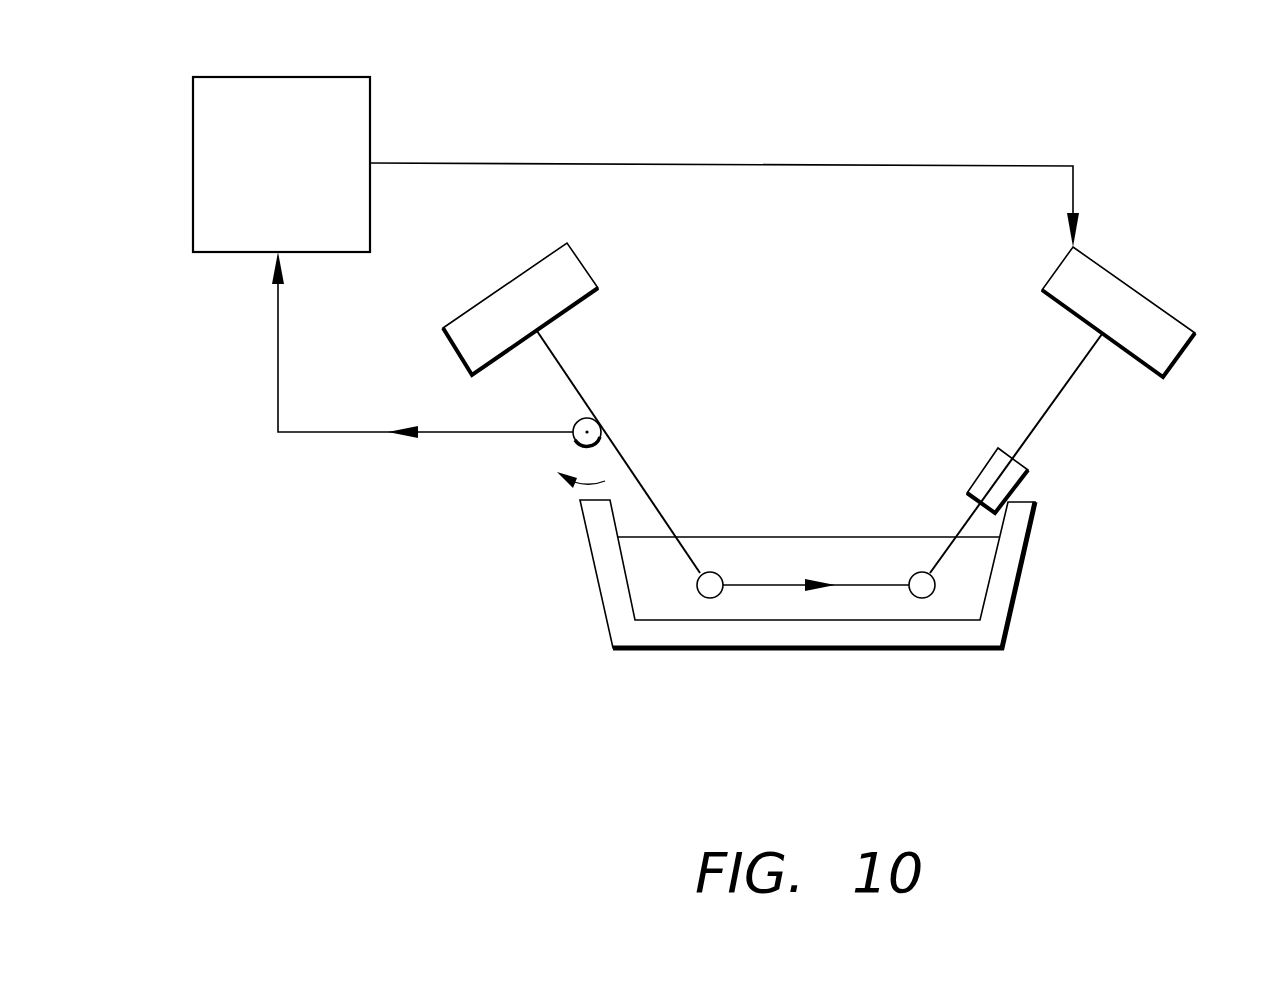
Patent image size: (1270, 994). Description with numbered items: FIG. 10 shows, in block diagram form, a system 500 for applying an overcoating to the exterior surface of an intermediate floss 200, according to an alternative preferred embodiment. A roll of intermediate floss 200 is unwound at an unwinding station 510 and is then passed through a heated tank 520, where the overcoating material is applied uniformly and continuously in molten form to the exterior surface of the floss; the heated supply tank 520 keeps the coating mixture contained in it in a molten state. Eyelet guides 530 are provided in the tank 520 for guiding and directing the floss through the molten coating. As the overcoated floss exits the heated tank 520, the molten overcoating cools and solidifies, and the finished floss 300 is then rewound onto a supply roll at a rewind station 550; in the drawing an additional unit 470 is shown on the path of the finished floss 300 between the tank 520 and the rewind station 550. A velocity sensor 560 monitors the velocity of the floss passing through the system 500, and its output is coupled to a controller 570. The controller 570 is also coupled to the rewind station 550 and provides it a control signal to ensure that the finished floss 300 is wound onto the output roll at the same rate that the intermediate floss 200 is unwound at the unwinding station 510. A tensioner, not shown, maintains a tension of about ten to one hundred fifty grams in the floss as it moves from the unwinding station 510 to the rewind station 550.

The system 500 is at (1043, 67).
The controller 570 is at (268, 76).
The unwinding station 510 is at (506, 284).
The intermediate floss 200 is at (647, 492).
The velocity sensor 560 is at (577, 422).
The heated tank 520 is at (808, 650).
The eyelet guides 530 is at (707, 598).
The finished floss 300 is at (1060, 393).
The treatment unit 470 is at (1027, 474).
The rewind station 550 is at (1137, 288).